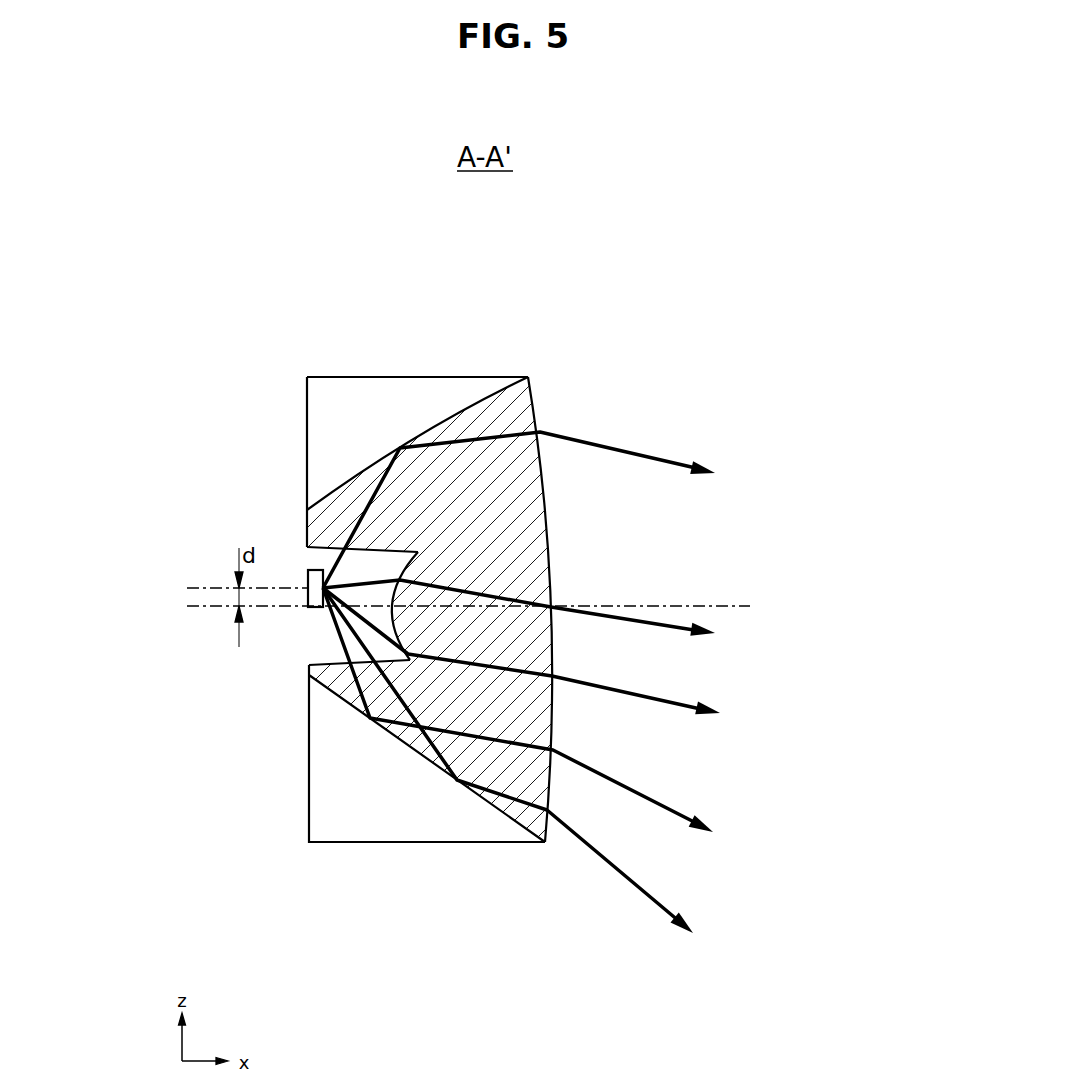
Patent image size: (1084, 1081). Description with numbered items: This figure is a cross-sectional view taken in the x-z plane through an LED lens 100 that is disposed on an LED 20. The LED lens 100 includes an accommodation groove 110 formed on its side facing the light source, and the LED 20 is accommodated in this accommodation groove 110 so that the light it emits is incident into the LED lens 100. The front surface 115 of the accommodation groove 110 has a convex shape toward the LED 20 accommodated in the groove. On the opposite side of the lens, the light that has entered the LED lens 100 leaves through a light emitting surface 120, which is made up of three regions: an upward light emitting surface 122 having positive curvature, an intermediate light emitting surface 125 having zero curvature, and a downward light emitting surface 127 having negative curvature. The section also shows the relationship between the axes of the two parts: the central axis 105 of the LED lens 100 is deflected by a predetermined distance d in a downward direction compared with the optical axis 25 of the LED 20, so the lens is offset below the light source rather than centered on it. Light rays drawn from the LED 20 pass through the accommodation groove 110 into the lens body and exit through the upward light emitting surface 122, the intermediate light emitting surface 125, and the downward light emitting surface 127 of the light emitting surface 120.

The LED lens 100 is at (568, 368).
The LED 20 is at (316, 570).
The optical axis of the LED 25 is at (232, 588).
The central axis of the LED lens 105 is at (232, 607).
The accommodation groove 110 is at (321, 628).
The front surface of the accommodation groove 115 is at (400, 592).
The light emitting surface 120 is at (711, 609).
The upward light emitting surface 122 is at (540, 422).
The intermediate light emitting surface 125 is at (551, 558).
The downward light emitting surface 127 is at (682, 771).